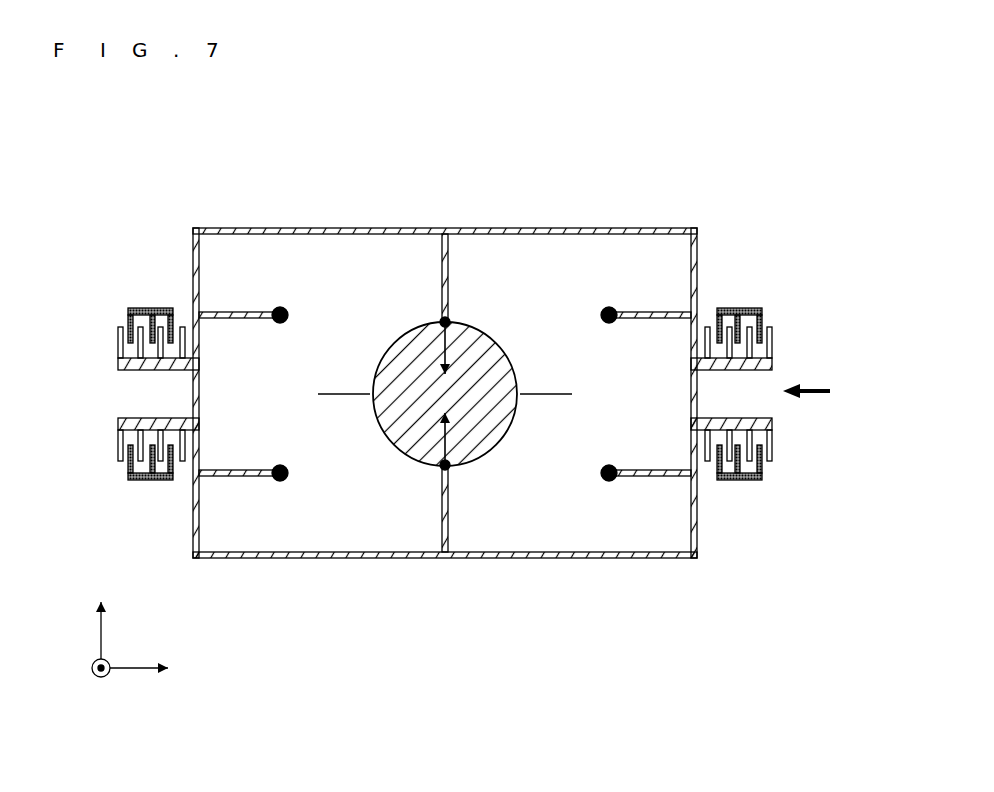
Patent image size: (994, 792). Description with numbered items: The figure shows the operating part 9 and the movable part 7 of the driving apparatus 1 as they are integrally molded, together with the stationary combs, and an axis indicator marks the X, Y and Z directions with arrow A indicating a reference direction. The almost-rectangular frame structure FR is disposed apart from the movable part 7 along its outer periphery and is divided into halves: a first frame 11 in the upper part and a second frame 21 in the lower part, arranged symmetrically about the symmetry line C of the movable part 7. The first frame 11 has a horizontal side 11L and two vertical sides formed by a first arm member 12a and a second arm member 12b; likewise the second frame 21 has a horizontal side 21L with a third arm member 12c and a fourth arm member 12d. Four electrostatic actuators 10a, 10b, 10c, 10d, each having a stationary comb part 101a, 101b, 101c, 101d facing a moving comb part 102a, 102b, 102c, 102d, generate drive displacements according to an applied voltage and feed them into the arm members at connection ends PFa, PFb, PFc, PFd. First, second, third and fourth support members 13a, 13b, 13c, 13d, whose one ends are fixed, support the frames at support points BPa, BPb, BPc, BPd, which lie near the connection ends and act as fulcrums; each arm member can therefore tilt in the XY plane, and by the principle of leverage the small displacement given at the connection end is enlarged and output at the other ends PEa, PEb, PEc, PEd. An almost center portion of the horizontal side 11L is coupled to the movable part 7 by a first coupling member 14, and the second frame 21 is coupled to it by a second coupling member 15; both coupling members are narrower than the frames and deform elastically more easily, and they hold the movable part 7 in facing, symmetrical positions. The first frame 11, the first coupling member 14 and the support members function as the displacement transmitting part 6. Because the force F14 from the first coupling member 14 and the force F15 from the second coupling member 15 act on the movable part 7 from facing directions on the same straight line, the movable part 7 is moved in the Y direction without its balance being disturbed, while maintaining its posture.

The driving apparatus 1 is at (121, 118).
The operating part 9 is at (445, 365).
The displacement transmitting part 6 is at (255, 228).
The frame structure FR is at (358, 226).
The first frame 11 is at (495, 226).
The horizontal side 11L is at (583, 228).
The second frame 21 is at (370, 558).
The horizontal side of second frame 21L is at (564, 558).
The other end of second arm member PEb is at (196, 228).
The other end of first arm member PEa is at (696, 228).
The other end of fourth arm member PEd is at (195, 558).
The other end of third arm member PEc is at (696, 558).
The second arm member 12b is at (193, 238).
The first arm member 12a is at (697, 238).
The fourth arm member 12d is at (193, 538).
The third arm member 12c is at (697, 538).
The first coupling member 14 is at (448, 255).
The second coupling member 15 is at (448, 524).
The force from first coupling member F14 is at (452, 334).
The force from second coupling member F15 is at (452, 454).
The movable part 7 is at (415, 340).
The symmetry line C is at (449, 394).
The second support member 13b is at (240, 318).
The first support member 13a is at (645, 318).
The fourth support member 13d is at (240, 478).
The third support member 13c is at (645, 478).
The support point BPb is at (206, 310).
The support point BPa is at (689, 310).
The support point BPd is at (206, 468).
The support point BPc is at (689, 468).
The electrostatic actuator 10b is at (121, 307).
The electrostatic actuator 10a is at (770, 307).
The electrostatic actuator 10d is at (121, 471).
The electrostatic actuator 10c is at (770, 471).
The stationary comb part 101b is at (108, 325).
The stationary comb part 101a is at (763, 312).
The stationary comb part 101d is at (128, 473).
The stationary comb part 101c is at (763, 473).
The moving comb part 102b is at (118, 355).
The moving comb part 102a is at (773, 355).
The moving comb part 102d is at (118, 432).
The moving comb part 102c is at (773, 432).
The connection end PFb is at (192, 374).
The connection end PFa is at (698, 374).
The connection end PFd is at (192, 417).
The connection end PFc is at (698, 417).
The air flow direction A is at (816, 393).
The X axis X is at (101, 616).
The Y axis Y is at (91, 676).
The Z axis Z is at (151, 669).